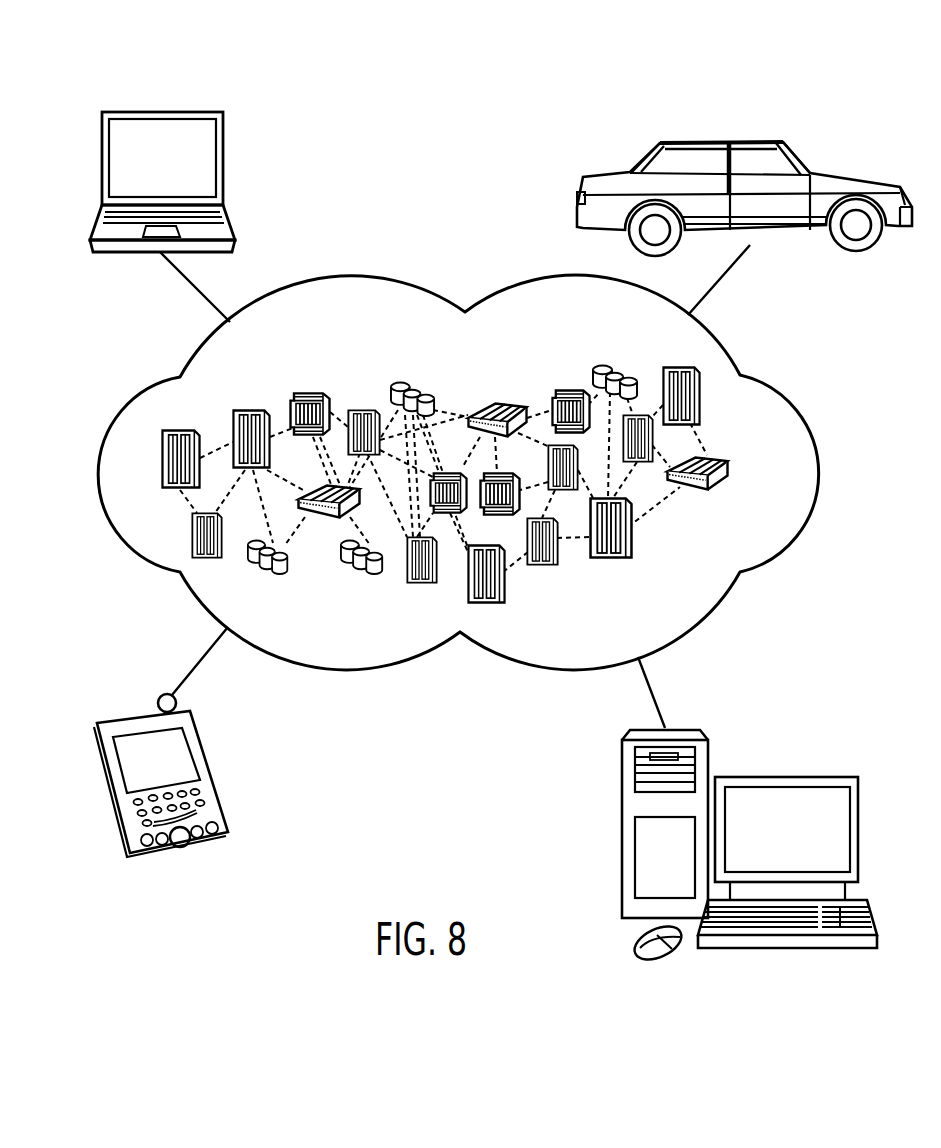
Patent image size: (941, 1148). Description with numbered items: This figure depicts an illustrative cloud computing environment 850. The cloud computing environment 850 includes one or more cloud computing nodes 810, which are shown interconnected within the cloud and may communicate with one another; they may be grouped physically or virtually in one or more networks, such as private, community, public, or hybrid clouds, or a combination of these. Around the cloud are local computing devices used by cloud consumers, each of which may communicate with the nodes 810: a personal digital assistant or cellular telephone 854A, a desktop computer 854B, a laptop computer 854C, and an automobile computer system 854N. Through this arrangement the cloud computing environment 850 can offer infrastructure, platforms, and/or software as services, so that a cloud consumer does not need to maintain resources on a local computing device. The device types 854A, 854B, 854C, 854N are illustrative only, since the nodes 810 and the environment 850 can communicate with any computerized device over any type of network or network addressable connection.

The cloud computing environment 850 is at (800, 382).
The cloud computing nodes 810 is at (744, 474).
The personal digital assistant (PDA) or cellular telephone 854A is at (141, 710).
The desktop computer 854B is at (785, 775).
The laptop computer 854C is at (160, 110).
The automobile computer system 854N is at (722, 138).